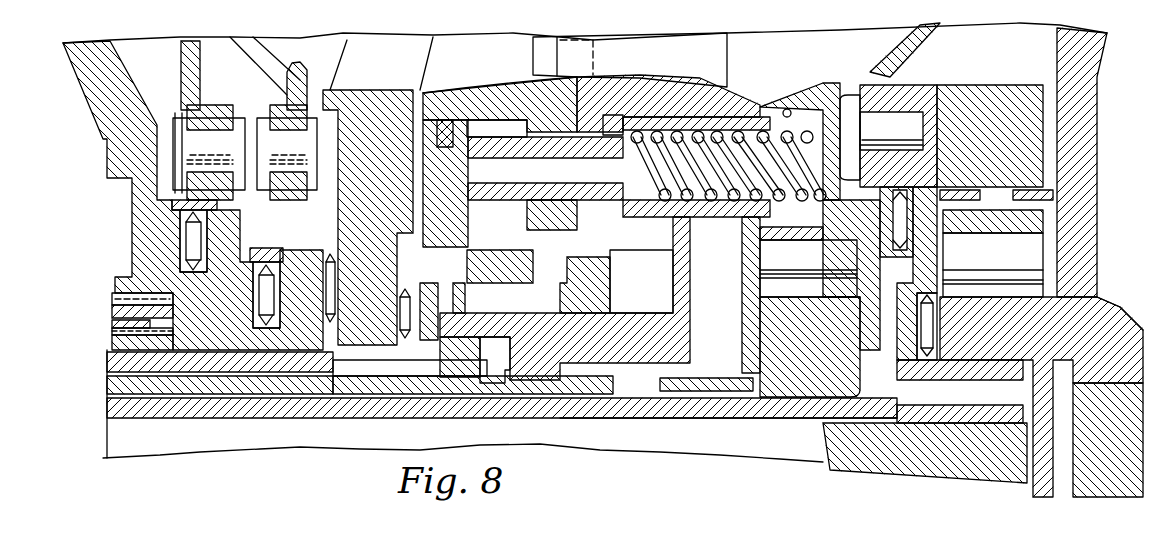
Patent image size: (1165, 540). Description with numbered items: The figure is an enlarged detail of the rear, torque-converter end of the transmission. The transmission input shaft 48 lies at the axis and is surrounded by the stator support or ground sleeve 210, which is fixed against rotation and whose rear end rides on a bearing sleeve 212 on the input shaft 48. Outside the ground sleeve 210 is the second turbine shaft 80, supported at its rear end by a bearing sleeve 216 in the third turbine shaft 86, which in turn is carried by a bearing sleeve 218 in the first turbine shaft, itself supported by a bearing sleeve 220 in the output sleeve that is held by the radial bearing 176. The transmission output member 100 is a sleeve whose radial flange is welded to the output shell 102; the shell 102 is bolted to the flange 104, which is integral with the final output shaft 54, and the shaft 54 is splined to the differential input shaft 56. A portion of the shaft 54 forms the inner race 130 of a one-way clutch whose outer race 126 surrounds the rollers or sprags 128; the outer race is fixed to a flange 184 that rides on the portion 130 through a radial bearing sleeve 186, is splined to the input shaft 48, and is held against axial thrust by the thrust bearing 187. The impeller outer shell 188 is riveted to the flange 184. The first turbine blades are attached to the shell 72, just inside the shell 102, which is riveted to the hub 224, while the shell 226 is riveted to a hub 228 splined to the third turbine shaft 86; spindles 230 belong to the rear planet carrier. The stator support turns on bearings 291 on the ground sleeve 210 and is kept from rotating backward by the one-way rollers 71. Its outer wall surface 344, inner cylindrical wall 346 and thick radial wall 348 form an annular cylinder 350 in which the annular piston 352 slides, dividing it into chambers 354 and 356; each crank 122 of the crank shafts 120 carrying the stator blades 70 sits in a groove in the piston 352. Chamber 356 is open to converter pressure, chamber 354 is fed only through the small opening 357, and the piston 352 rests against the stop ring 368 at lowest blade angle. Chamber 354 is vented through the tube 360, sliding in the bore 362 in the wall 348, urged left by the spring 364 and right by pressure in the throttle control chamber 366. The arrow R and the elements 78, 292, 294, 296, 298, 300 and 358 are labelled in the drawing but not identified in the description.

The output shell 102 is at (107, 93).
The roller bearing 294 is at (193, 247).
The roller 296 is at (267, 300).
The shell 72 is at (188, 62).
The hub 224 is at (210, 115).
The shell 226 is at (273, 65).
The hub 228 is at (289, 98).
The cover plate 78 is at (378, 50).
The pressure chamber 356 is at (420, 117).
The roller 298 is at (333, 246).
The roller 300 is at (407, 328).
The annular cylinder 350 is at (480, 120).
The pressure chamber 354 is at (487, 250).
The stop ring 368 is at (462, 300).
The small opening 357 is at (457, 238).
The spindles 230 is at (488, 80).
The stator blades 70 is at (543, 48).
The crank shafts 120 is at (630, 60).
The throttle control chamber 366 is at (615, 125).
The tube 360 is at (613, 202).
The spring 364 is at (718, 195).
The surface 344 is at (760, 105).
The bore 362 is at (787, 110).
The radial wall 348 is at (807, 93).
The direction arrow R is at (738, 56).
The impeller outer shell 188 is at (927, 42).
The flange 184 is at (917, 97).
The outer race 126 is at (990, 97).
The flange 104 is at (1093, 33).
The one-way rollers 128 is at (1030, 250).
The bearing 292 is at (893, 227).
The one-way rollers 71 is at (760, 282).
The thrust bearing 187 is at (927, 340).
The inner race 130 is at (1033, 313).
The final output shaft 54 is at (1127, 330).
The differential input shaft 56 is at (1133, 473).
The transmission input shaft 48 is at (877, 450).
The radial bearing sleeve 186 is at (990, 362).
The crank 122 is at (607, 274).
The annular piston 352 is at (590, 288).
The passage 358 is at (715, 355).
The inner cylindrical wall 346 is at (505, 383).
The bearings 291 is at (653, 390).
The second turbine shaft 80 is at (343, 384).
The bearing sleeve 216 is at (110, 376).
The third turbine shaft 86 is at (182, 363).
The ground sleeve 210 is at (240, 408).
The bearing sleeve 212 is at (740, 410).
The bearing sleeve 218 is at (112, 348).
The transmission output member 100 is at (113, 336).
The bearing sleeve 220 is at (113, 323).
The radial bearing 176 is at (112, 309).